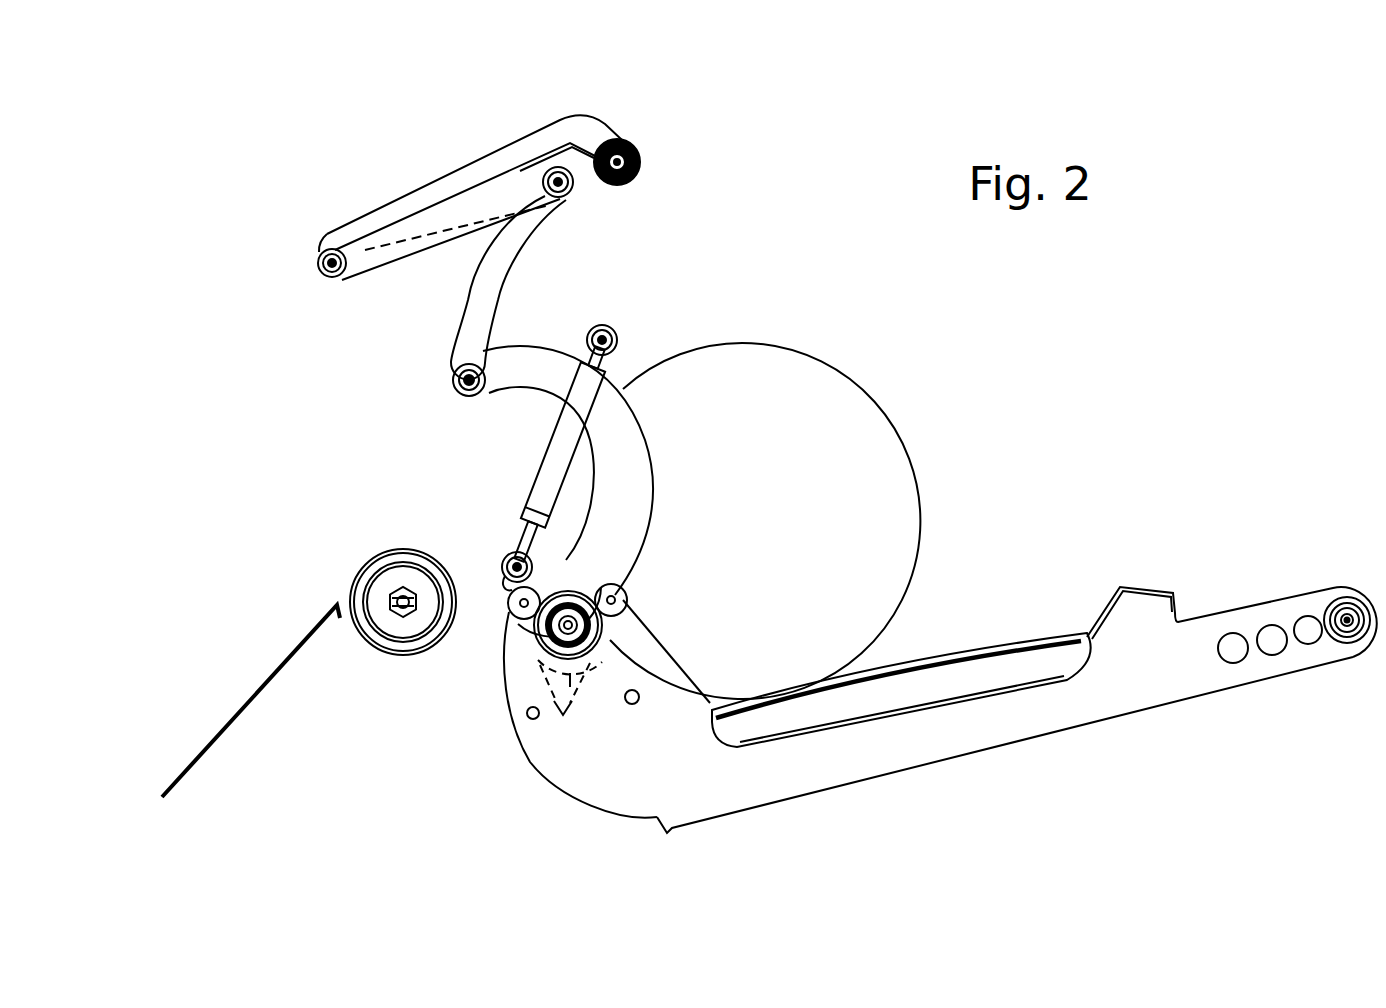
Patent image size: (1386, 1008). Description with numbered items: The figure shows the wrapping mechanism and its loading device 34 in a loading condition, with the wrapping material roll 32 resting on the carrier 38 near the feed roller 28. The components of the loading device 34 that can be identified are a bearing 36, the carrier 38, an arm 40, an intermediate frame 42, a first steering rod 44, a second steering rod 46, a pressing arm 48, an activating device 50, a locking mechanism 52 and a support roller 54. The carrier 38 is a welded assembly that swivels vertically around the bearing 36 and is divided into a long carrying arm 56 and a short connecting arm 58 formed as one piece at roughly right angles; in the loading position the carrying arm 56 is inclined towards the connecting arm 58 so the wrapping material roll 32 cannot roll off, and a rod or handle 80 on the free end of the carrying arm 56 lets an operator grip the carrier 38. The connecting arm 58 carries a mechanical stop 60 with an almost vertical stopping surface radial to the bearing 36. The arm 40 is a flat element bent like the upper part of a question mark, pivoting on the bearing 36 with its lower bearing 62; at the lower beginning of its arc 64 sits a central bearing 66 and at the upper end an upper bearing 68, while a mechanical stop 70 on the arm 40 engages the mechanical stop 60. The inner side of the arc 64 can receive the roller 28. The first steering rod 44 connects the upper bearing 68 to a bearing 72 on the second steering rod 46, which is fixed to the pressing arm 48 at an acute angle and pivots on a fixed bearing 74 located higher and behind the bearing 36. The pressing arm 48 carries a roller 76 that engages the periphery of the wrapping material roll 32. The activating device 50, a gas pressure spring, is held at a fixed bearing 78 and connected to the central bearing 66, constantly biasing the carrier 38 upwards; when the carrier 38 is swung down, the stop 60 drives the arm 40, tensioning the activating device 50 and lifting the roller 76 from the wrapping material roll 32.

The roller 28 is at (392, 655).
The wrapping material roll 32 is at (822, 355).
The loading device 34 is at (1062, 426).
The bearing 36 is at (602, 624).
The carrier 38 is at (948, 780).
The arm 40 is at (568, 557).
The intermediate frame 42 is at (931, 645).
The first steering rod 44 is at (447, 330).
The second steering rod 46 is at (405, 262).
The pressing arm 48 is at (499, 146).
The activating device 50 is at (543, 470).
The locking mechanism 52 is at (655, 716).
The support roller 54 is at (535, 657).
The carrying arm 56 is at (1055, 730).
The connecting arm 58 is at (557, 778).
The mechanical stop 60 is at (587, 707).
The lower bearing 62 is at (577, 578).
The arc 64 is at (495, 335).
The central bearing 66 is at (503, 557).
The upper bearing 68 is at (462, 398).
The mechanical stop 70 is at (560, 702).
The bearing 72 is at (570, 192).
The bearing 74 is at (318, 258).
The roller 76 is at (641, 160).
The bearing 78 is at (612, 328).
The rod or handle 80 is at (1340, 606).